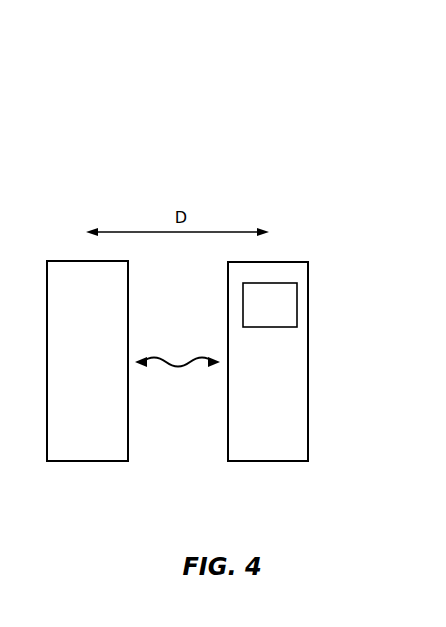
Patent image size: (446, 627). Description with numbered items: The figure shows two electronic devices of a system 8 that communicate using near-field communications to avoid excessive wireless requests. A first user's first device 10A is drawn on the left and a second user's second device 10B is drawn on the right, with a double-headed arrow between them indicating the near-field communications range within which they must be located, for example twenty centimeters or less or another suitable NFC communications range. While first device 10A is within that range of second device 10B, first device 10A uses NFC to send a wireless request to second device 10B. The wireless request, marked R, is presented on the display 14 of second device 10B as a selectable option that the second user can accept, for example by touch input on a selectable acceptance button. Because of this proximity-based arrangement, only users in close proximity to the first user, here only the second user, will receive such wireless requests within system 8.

The system 8 is at (314, 238).
The first device 10A is at (89, 461).
The second device 10B is at (265, 461).
The display 14 is at (298, 380).